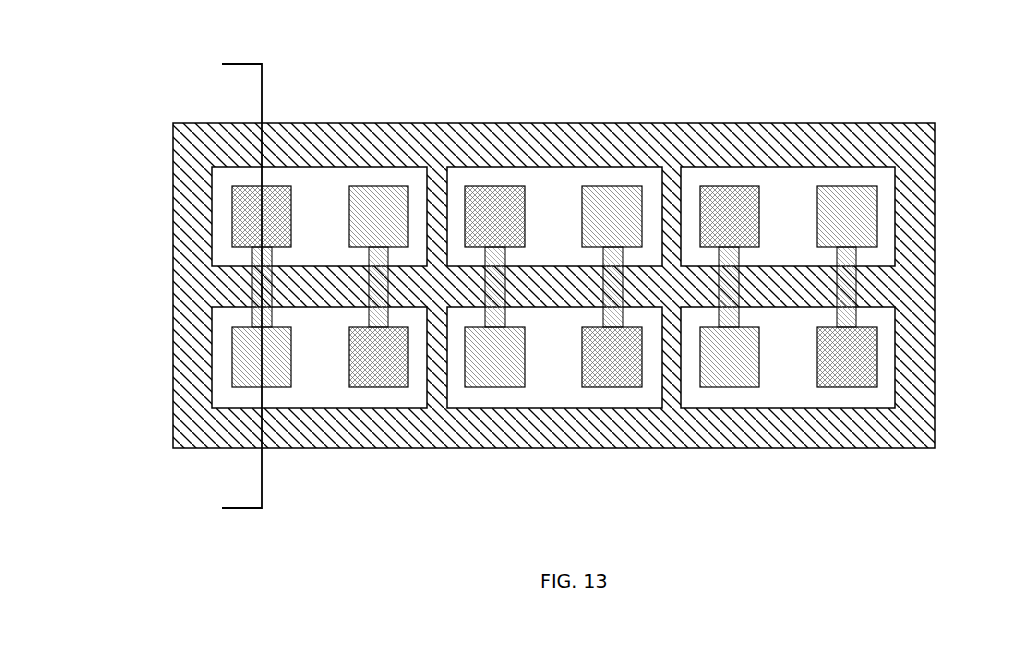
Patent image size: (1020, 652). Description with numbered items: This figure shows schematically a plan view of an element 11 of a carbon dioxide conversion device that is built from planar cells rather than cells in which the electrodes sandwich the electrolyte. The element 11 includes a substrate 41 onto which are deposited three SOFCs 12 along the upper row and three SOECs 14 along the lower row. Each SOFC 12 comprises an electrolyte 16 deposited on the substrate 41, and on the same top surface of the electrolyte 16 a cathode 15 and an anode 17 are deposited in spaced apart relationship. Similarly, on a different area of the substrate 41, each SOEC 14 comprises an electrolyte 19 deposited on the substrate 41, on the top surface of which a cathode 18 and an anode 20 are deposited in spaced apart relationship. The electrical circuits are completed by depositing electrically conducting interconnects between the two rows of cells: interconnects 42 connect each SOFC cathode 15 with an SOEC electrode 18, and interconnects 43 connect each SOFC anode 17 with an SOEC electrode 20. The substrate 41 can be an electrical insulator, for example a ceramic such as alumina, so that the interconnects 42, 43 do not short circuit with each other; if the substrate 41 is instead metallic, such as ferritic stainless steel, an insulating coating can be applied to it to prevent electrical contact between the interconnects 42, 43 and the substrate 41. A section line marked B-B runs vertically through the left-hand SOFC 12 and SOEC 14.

The element 11 is at (491, 288).
The SOFC 12 is at (319, 144).
The SOEC 14 is at (319, 434).
The cathode 15 is at (276, 193).
The electrolyte 16 is at (325, 187).
The anode 17 is at (373, 193).
The cathode 18 is at (276, 373).
The electrolyte 19 is at (325, 368).
The anode 20 is at (381, 365).
The substrate 41 is at (188, 222).
The interconnects 42 is at (257, 285).
The interconnects 43 is at (382, 290).